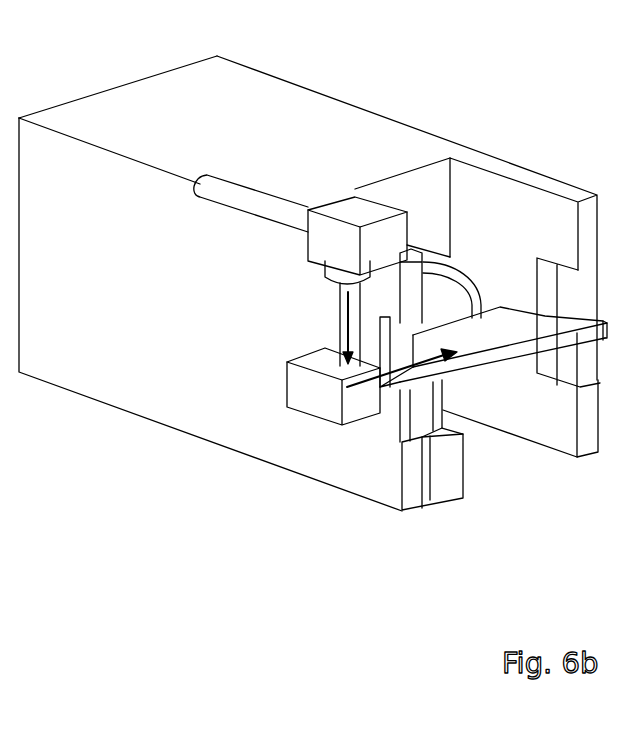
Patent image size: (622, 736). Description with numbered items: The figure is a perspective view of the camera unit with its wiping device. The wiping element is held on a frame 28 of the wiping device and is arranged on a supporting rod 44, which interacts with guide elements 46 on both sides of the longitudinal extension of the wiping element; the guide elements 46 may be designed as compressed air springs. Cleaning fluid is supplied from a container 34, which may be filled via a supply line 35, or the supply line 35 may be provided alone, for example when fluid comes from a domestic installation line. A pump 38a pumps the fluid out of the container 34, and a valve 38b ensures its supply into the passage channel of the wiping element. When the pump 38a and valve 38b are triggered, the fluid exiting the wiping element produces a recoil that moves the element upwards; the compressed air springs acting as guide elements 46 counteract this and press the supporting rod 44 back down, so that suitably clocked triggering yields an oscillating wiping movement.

The frame 28 is at (593, 418).
The container 34 is at (371, 252).
The supply line 35 is at (218, 180).
The pump 38a is at (305, 398).
The valve 38b is at (448, 467).
The supporting rod 44 is at (602, 315).
The guide elements 46 is at (577, 345).